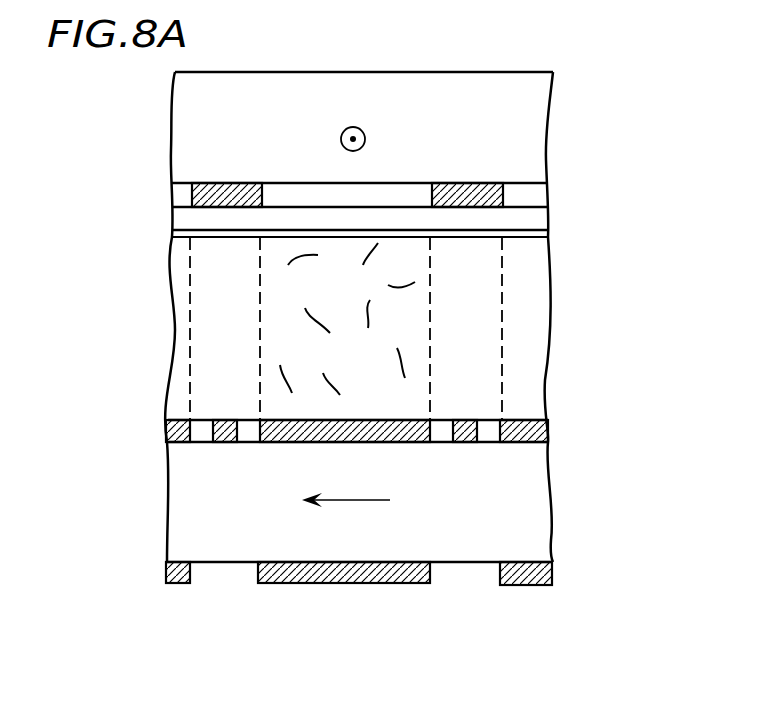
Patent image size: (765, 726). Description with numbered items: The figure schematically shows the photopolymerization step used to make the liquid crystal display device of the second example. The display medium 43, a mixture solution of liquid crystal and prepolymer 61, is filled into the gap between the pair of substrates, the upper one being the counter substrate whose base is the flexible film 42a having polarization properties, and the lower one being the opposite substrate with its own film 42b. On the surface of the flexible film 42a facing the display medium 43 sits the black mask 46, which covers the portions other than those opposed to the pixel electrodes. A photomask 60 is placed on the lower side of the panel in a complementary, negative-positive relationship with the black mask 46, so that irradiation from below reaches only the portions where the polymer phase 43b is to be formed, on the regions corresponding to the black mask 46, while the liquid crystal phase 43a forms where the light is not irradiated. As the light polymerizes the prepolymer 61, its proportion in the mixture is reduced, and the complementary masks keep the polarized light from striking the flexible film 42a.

The flexible film 42a is at (532, 88).
The lower glass substrate 42b is at (538, 514).
The black mask 46 is at (495, 200).
The display medium 43 is at (364, 339).
The liquid crystal phase 43a is at (408, 400).
The polymer phase 43b is at (480, 323).
The prepolymer 61 is at (408, 277).
The photomask 60 is at (517, 585).